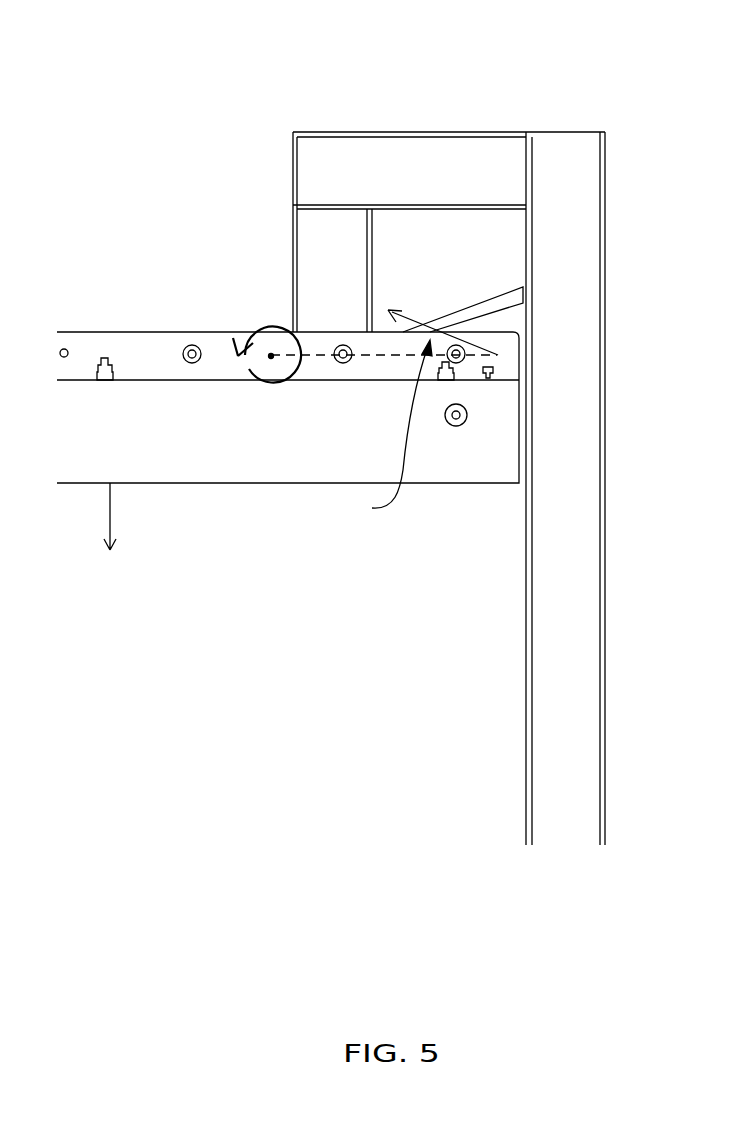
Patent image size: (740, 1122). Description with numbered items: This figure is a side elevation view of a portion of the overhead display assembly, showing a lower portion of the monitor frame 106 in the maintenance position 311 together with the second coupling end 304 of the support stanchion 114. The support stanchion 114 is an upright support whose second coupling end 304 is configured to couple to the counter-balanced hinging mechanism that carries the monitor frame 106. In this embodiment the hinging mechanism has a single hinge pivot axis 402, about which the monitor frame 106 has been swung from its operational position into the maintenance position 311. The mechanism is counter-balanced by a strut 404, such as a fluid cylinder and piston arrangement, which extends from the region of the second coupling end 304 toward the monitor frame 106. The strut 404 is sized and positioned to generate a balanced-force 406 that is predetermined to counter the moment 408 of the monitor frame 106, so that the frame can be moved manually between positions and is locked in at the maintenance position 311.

The maintenance position 311 is at (430, 100).
The second coupling end 304 is at (385, 250).
The strut 404 is at (498, 297).
The single hinge pivot axis 402 is at (271, 354).
The support stanchion 114 is at (573, 455).
The monitor frame 106 is at (230, 462).
The balanced-force 406 is at (382, 431).
The moment 408 is at (112, 508).